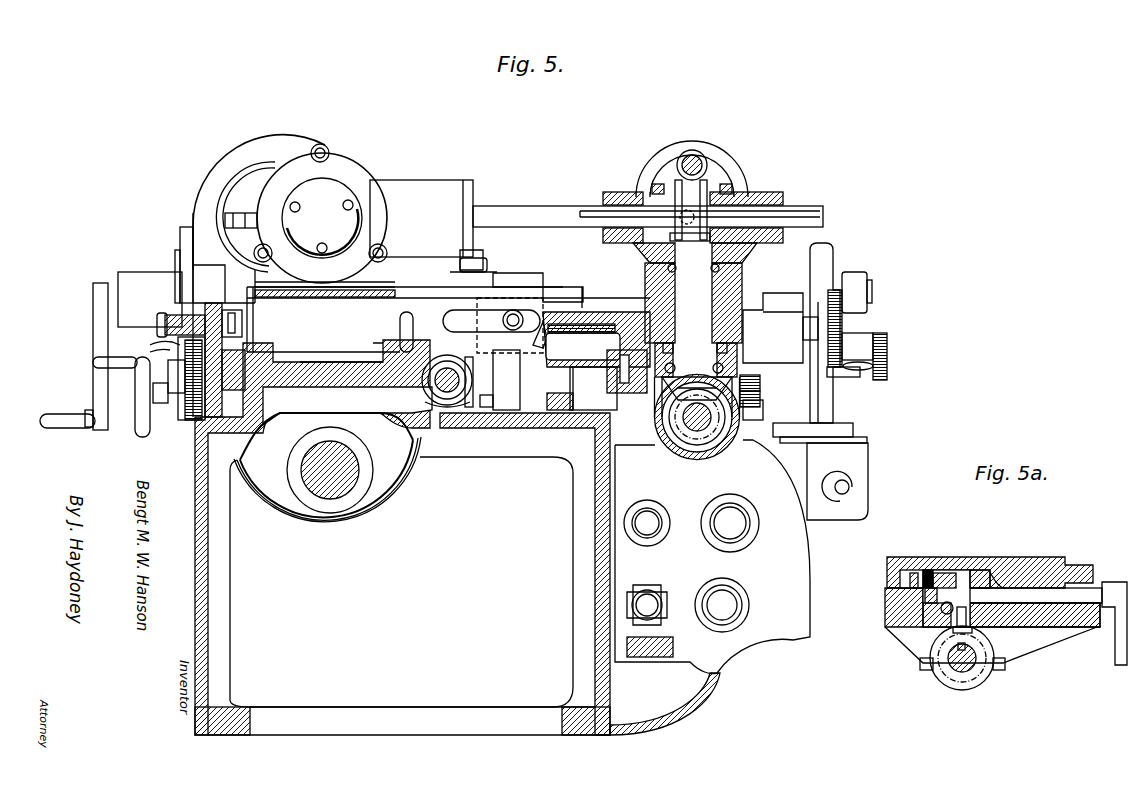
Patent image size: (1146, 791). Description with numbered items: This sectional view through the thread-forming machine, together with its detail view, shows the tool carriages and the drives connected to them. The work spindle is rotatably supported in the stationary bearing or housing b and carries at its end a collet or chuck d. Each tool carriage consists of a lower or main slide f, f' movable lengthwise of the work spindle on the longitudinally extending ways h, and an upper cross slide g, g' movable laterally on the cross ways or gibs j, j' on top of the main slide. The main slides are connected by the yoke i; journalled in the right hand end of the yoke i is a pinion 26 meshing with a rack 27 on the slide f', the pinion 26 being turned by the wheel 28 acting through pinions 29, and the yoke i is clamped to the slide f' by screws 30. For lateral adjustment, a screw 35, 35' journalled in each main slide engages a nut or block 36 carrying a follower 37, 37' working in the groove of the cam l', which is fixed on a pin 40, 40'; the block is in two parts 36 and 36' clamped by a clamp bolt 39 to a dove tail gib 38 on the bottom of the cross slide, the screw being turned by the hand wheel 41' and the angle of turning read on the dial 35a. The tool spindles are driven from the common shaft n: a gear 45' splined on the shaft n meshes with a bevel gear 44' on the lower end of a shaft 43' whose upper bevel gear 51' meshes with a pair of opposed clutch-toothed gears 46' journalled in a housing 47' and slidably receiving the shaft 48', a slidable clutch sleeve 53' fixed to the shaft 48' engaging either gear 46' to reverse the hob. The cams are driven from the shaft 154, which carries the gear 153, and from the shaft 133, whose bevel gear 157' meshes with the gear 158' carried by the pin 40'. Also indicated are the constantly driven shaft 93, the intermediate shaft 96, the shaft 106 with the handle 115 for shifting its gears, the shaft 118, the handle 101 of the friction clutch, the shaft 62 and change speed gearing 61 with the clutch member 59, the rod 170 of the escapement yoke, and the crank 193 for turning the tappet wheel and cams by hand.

In FIG. 5, the bearing or housing b is at (275, 140).
In FIG. 5, the collet or chuck d is at (250, 183).
In FIG. 5, the screws 30 is at (162, 318).
In FIG. 5, the yoke or connecting bar i is at (178, 332).
In FIG. 5A, the yoke or connecting bar i is at (955, 688).
In FIG. 5, the crank 193 is at (93, 383).
In FIG. 5, the wheel 28 is at (138, 433).
In FIG. 5, the pinions 29 is at (187, 418).
In FIG. 5, the pinion 26 is at (238, 396).
In FIG. 5, the rack 27 is at (258, 350).
In FIG. 5, the main slide f' is at (401, 474).
In FIG. 5, the ways h is at (382, 352).
In FIG. 5, the shaft 133 is at (437, 382).
In FIG. 5, the bevel gear 157' is at (444, 426).
In FIG. 5, the gear 158' is at (450, 419).
In FIG. 5, the cam l' is at (496, 415).
In FIG. 5, the shaft 154 is at (320, 492).
In FIG. 5, the gear 153 is at (302, 540).
In FIG. 5, the clutch member 59 is at (505, 290).
In FIG. 5, the block part 36' is at (510, 295).
In FIG. 5A, the block part 36' is at (928, 559).
In FIG. 5, the follower 37' is at (546, 293).
In FIG. 5, the cross slide g' is at (448, 297).
In FIG. 5, the clamp bolt 39 is at (503, 320).
In FIG. 5A, the clamp bolt 39 is at (1085, 610).
In FIG. 5, the screw 35' is at (596, 352).
In FIG. 5, the pin 40' is at (573, 408).
In FIG. 5, the shaft 48' is at (648, 199).
In FIG. 5, the opposed gears 46' is at (703, 169).
In FIG. 5, the housing 47' is at (716, 186).
In FIG. 5, the clutch sleeve 53' is at (738, 182).
In FIG. 5, the bevel gear 51' is at (693, 233).
In FIG. 5, the shaft 43' is at (673, 320).
In FIG. 5, the change speed gearing 61 is at (812, 256).
In FIG. 5, the dial 35a is at (836, 300).
In FIG. 5, the cross ways or gibs j is at (780, 311).
In FIG. 5, the hand wheel 41' is at (870, 328).
In FIG. 5, the shaft 62 is at (886, 353).
In FIG. 5, the bevel gear 44' is at (724, 370).
In FIG. 5, the handle 101 is at (762, 388).
In FIG. 5, the handle 115 is at (762, 402).
In FIG. 5, the common shaft n is at (690, 425).
In FIG. 5, the gear 45' is at (692, 438).
In FIG. 5, the rod 170 is at (850, 487).
In FIG. 5, the intermediate shaft 96 is at (650, 521).
In FIG. 5, the shaft 106 is at (732, 521).
In FIG. 5, the shaft 93 is at (650, 603).
In FIG. 5, the shaft 118 is at (725, 603).
In FIG. 5, the main slide f is at (729, 557).
In FIG. 5A, the main slide f is at (968, 629).
In FIG. 5A, the cross slide g is at (990, 556).
In FIG. 5A, the dove tail gib 38 is at (950, 573).
In FIG. 5A, the nut or block 36 is at (983, 559).
In FIG. 5A, the cross ways or gibs j' is at (1005, 559).
In FIG. 5A, the screw 35 is at (908, 626).
In FIG. 5A, the follower 37 is at (915, 642).
In FIG. 5A, the pin 40 is at (969, 683).